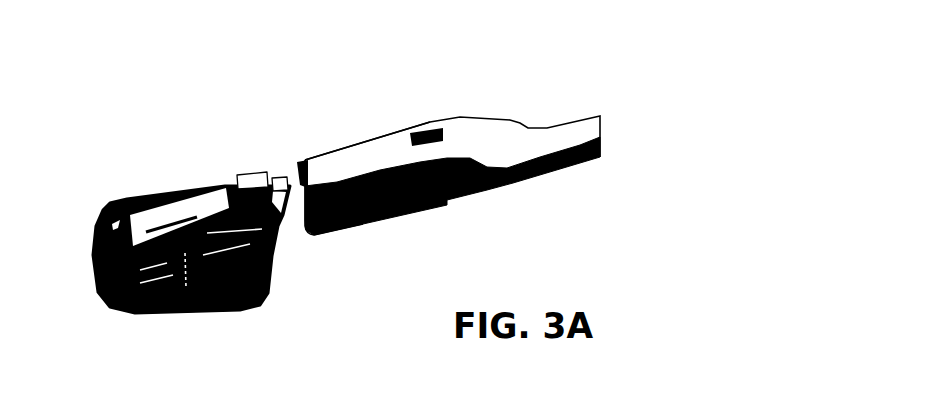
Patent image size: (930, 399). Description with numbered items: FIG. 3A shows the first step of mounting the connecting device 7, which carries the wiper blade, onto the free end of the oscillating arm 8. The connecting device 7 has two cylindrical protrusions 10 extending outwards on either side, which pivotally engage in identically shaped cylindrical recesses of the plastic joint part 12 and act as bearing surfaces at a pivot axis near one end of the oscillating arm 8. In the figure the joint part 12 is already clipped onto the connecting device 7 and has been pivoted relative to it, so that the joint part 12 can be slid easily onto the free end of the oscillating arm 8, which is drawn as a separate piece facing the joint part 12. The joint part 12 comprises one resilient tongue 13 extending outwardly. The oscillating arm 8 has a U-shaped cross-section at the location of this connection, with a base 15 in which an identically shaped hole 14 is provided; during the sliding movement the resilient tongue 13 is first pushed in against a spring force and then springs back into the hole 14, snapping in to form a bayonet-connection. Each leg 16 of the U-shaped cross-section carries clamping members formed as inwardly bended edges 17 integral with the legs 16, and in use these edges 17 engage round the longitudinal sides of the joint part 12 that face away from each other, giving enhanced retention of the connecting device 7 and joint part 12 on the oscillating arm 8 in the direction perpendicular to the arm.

The connecting device 7 is at (100, 195).
The oscillating arm 8 is at (498, 102).
The cylindrical protrusions 10 is at (180, 305).
The joint part 12 is at (176, 187).
The resilient tongue 13 is at (253, 175).
The hole 14 is at (420, 137).
The base 15 is at (377, 145).
The leg 16 is at (302, 162).
The inwardly bended edges 17 is at (420, 212).